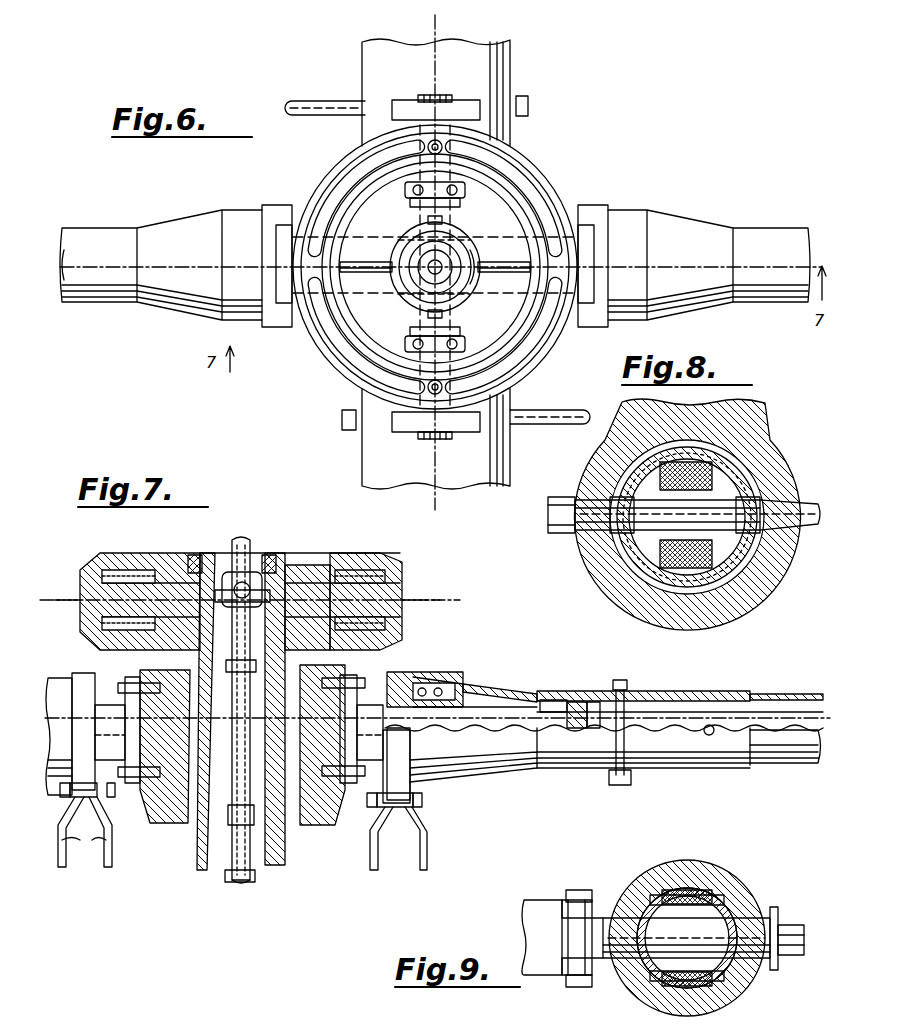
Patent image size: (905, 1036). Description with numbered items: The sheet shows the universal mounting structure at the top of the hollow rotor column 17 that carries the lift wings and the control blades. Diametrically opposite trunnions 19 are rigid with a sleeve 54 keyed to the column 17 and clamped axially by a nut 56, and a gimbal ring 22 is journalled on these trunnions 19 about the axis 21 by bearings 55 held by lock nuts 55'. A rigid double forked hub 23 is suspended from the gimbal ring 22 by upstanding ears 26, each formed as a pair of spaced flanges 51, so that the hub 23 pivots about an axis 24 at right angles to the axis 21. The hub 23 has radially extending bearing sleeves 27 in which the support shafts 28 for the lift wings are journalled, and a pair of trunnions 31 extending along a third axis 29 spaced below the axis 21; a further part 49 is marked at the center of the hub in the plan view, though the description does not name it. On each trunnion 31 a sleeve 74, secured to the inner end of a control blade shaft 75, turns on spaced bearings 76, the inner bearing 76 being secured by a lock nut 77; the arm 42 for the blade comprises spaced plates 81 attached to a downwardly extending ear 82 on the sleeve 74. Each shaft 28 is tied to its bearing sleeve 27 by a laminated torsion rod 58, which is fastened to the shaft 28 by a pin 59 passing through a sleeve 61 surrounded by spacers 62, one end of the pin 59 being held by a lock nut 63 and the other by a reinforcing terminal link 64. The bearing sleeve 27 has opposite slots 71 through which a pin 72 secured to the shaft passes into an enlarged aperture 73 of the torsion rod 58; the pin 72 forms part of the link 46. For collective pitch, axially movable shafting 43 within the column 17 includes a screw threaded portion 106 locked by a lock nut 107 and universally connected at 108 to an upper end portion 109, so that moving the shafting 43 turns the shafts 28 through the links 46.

In FIG. 7, the rotor column 17 is at (197, 862).
In FIG. 6, the trunnions 19 is at (392, 252).
In FIG. 7, the trunnions 19 is at (178, 560).
In FIG. 6, the axis of the trunnions 21 is at (504, 258).
In FIG. 7, the axis of the trunnions 21 is at (62, 604).
In FIG. 6, the gimbal ring 22 is at (522, 167).
In FIG. 7, the gimbal ring 22 is at (380, 552).
In FIG. 7, the hub 23 is at (150, 826).
In FIG. 6, the axis 24 is at (438, 22).
In FIG. 6, the upstanding ears 26 is at (460, 108).
In FIG. 6, the bearing sleeves 27 is at (510, 70).
In FIG. 8, the bearing sleeves 27 is at (745, 615).
In FIG. 8, the support shaft 28 is at (672, 585).
In FIG. 7, the third axis 29 is at (130, 735).
In FIG. 7, the trunnions 31 is at (122, 700).
In FIG. 7, the arm 42 is at (96, 880).
In FIG. 7, the shafting 43 is at (236, 882).
In FIG. 6, the link 46 is at (330, 90).
In FIG. 8, the link 46 is at (816, 503).
In FIG. 6, the bearing 49 is at (490, 288).
In FIG. 6, the flanges 51 is at (408, 105).
In FIG. 7, the sleeve 54 is at (214, 636).
In FIG. 7, the bearings 55 is at (238, 636).
In FIG. 7, the lock nuts 55' is at (244, 558).
In FIG. 6, the nut 56 is at (414, 304).
In FIG. 7, the nut 56 is at (200, 553).
In FIG. 8, the torsion rod 58 is at (714, 478).
In FIG. 9, the torsion rod 58 is at (700, 892).
In FIG. 9, the pin 59 is at (758, 937).
In FIG. 9, the sleeve 61 is at (645, 975).
In FIG. 9, the spacers 62 is at (724, 897).
In FIG. 9, the lock nut 63 is at (786, 962).
In FIG. 9, the terminal link 64 is at (528, 926).
In FIG. 8, the slots 71 is at (593, 540).
In FIG. 8, the pin 72 is at (628, 570).
In FIG. 8, the aperture 73 is at (660, 496).
In FIG. 6, the sleeve 74 is at (688, 216).
In FIG. 7, the sleeve 74 is at (56, 700).
In FIG. 6, the shaft 75 is at (196, 218).
In FIG. 7, the shaft 75 is at (795, 700).
In FIG. 7, the bearings 76 is at (440, 678).
In FIG. 7, the lock nut 77 is at (470, 690).
In FIG. 7, the plates 81 is at (62, 870).
In FIG. 7, the ear 82 is at (85, 800).
In FIG. 7, the screw threaded portion 106 is at (262, 642).
In FIG. 7, the lock nut 107 is at (228, 668).
In FIG. 7, the universal connection 108 is at (252, 572).
In FIG. 6, the upper end portion 109 is at (433, 263).
In FIG. 7, the upper end portion 109 is at (240, 542).